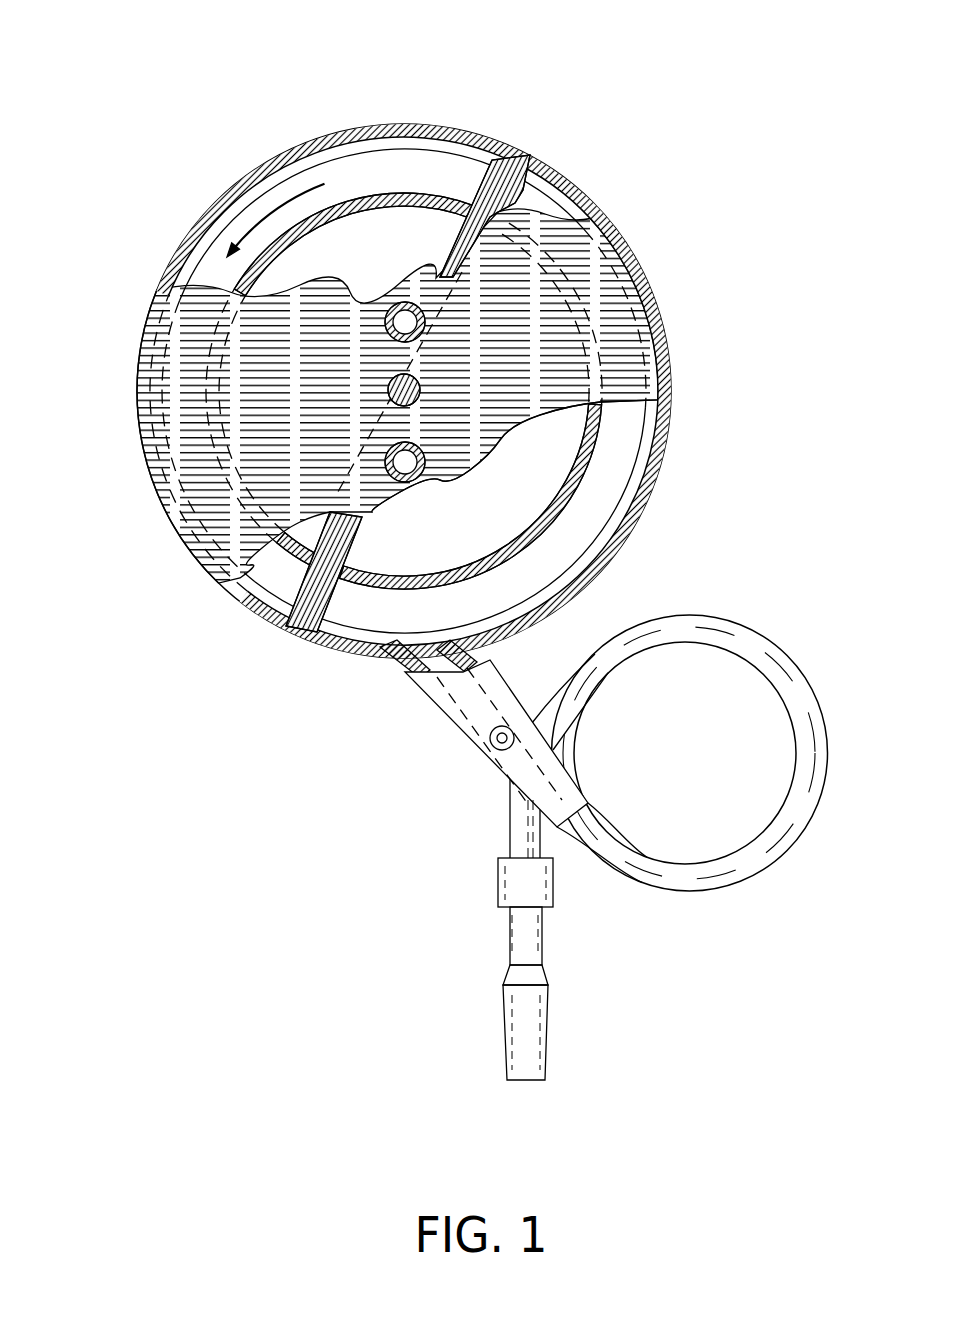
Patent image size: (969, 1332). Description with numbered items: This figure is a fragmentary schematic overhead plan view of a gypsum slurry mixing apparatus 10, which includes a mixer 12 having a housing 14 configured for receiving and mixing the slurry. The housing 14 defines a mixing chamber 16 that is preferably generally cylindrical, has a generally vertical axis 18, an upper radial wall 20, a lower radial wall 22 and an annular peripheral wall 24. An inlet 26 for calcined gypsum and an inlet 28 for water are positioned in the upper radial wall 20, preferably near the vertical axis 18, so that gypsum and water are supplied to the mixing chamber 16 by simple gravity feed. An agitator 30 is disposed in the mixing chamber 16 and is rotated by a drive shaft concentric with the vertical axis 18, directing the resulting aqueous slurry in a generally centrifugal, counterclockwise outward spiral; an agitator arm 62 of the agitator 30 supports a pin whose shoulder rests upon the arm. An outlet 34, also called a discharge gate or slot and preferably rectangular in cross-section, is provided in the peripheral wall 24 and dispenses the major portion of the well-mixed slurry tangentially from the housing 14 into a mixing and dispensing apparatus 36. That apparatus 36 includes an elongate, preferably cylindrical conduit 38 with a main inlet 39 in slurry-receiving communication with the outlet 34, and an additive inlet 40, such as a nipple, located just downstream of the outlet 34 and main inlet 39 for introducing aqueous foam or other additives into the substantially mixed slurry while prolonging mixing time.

The mixing apparatus 10 is at (161, 196).
The mixer 12 is at (672, 432).
The housing 14 is at (455, 125).
The mixing chamber 16 is at (500, 507).
The vertical axis 18 is at (393, 402).
The upper radial wall 20 is at (620, 352).
The lower radial wall 22 is at (402, 540).
The annular peripheral wall 24 is at (655, 490).
The inlet for calcined gypsum 26 is at (424, 312).
The inlet for water 28 is at (330, 452).
The agitator 30 is at (508, 158).
The outlet 34 is at (478, 735).
The mixing and dispensing apparatus 36 is at (508, 790).
The conduit 38 is at (677, 875).
The main inlet 39 is at (507, 717).
The additive inlet 40 is at (497, 773).
The agitator arm 62 is at (350, 520).